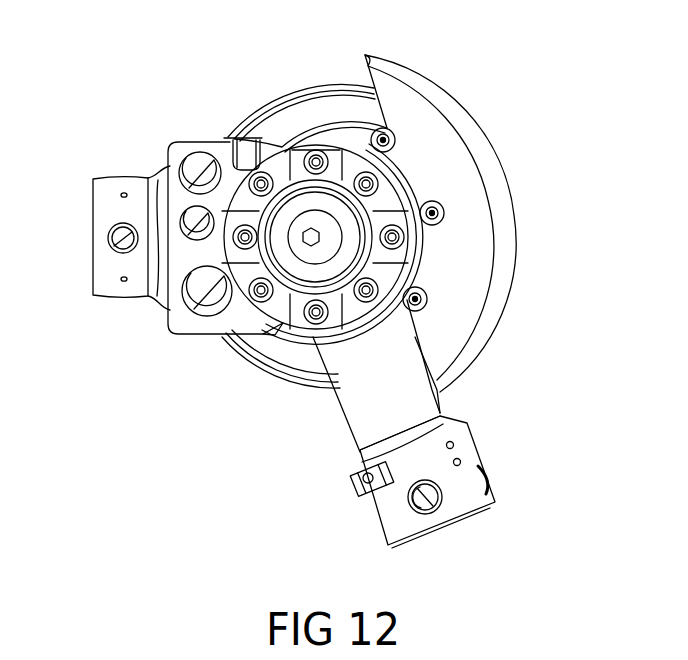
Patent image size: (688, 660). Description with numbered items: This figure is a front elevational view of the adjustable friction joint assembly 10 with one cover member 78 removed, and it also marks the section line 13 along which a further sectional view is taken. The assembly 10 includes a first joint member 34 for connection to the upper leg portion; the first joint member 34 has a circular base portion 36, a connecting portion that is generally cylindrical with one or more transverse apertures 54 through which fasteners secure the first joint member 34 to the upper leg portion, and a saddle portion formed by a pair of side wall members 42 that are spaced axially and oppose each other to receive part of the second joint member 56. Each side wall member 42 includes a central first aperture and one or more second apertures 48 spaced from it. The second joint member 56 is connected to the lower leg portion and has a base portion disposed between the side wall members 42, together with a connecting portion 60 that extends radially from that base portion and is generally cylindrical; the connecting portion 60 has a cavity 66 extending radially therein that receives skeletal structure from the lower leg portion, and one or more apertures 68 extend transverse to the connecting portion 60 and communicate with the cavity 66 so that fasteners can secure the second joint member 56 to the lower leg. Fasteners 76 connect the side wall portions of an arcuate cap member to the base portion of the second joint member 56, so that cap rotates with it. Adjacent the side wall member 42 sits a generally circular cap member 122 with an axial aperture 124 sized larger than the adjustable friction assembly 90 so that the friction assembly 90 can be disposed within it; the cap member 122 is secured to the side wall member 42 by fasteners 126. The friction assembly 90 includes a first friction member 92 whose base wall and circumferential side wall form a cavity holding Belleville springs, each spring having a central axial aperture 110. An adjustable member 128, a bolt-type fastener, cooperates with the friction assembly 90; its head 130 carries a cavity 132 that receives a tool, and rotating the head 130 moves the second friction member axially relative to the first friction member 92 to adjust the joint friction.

The adjustable friction joint assembly 10 is at (518, 60).
The section line 13- 13 is at (313, 578).
The first joint member 34 is at (96, 164).
The base portion 36 is at (158, 284).
The side wall members 42 is at (240, 318).
The second aperture 48 is at (193, 313).
The apertures 54 is at (108, 237).
The second joint member 56 is at (470, 404).
The connecting portion 60 is at (369, 414).
The cavity 66 is at (476, 515).
The apertures 68 is at (418, 506).
The fasteners 76 is at (394, 133).
The cover member 78 is at (358, 84).
The adjustable friction assembly 90 is at (395, 272).
The first friction member 92 is at (441, 373).
The aperture 110 is at (340, 240).
The cap member 122 is at (287, 172).
The aperture 124 is at (412, 188).
The fasteners 126 is at (237, 228).
The adjustable member 128 is at (310, 228).
The head 130 is at (385, 266).
The cavity 132 is at (253, 142).